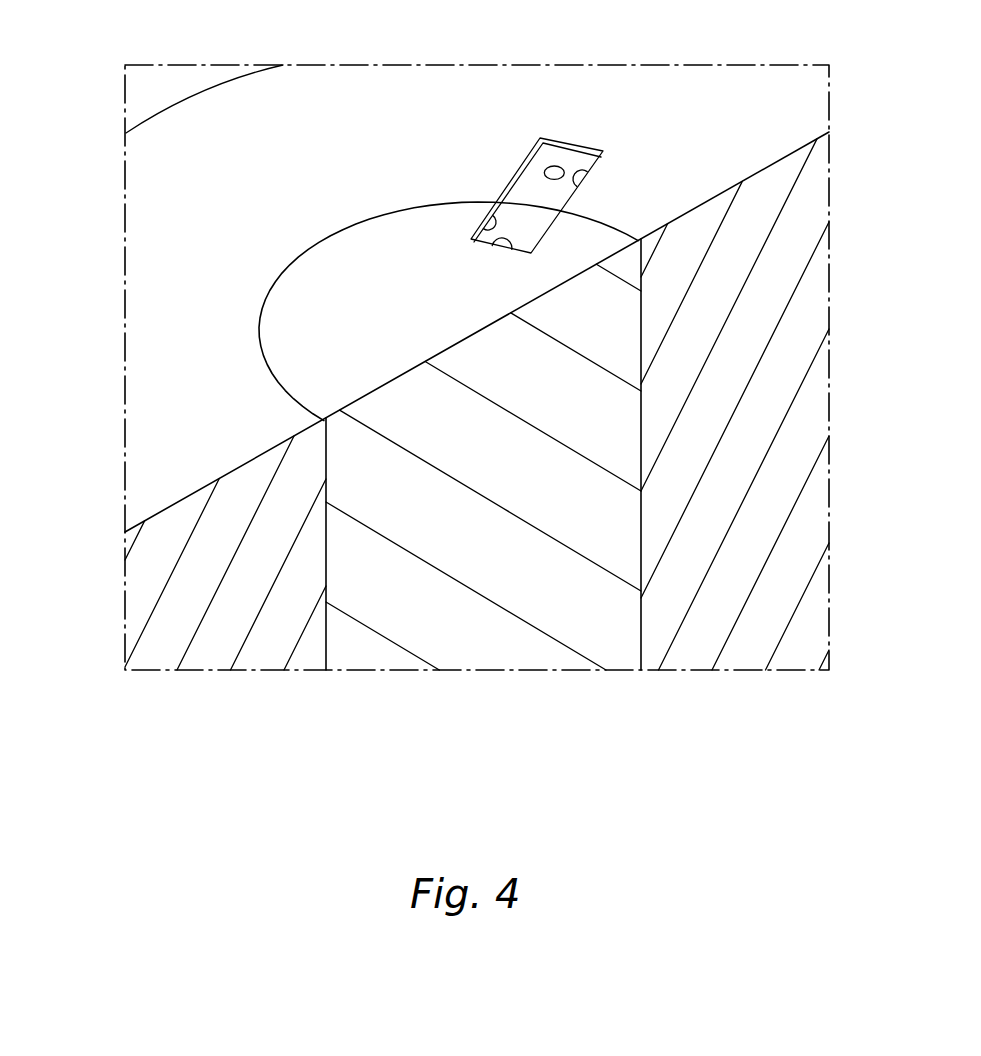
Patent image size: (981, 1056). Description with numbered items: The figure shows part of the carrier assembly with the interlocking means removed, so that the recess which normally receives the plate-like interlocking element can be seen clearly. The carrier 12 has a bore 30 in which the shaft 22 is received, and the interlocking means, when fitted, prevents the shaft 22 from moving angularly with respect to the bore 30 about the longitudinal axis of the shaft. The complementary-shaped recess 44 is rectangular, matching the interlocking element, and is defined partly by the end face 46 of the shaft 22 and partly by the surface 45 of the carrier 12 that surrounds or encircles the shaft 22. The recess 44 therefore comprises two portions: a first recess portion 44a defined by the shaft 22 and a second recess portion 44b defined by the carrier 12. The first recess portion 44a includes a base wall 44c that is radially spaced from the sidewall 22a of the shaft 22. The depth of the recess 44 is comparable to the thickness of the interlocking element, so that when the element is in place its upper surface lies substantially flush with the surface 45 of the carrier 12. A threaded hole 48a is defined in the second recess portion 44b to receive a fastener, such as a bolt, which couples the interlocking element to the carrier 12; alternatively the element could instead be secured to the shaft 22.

The carrier 12 is at (157, 585).
The shaft 22 is at (410, 620).
The sidewall of the shaft 22a is at (642, 404).
The bore 30 is at (641, 633).
The recess 44 is at (533, 228).
The first recess portion 44a is at (493, 225).
The second recess portion 44b is at (575, 178).
The base wall 44c is at (507, 238).
The surface of the carrier 45 is at (358, 174).
The end face of the shaft 46 is at (328, 272).
The threaded hole 48a is at (557, 165).